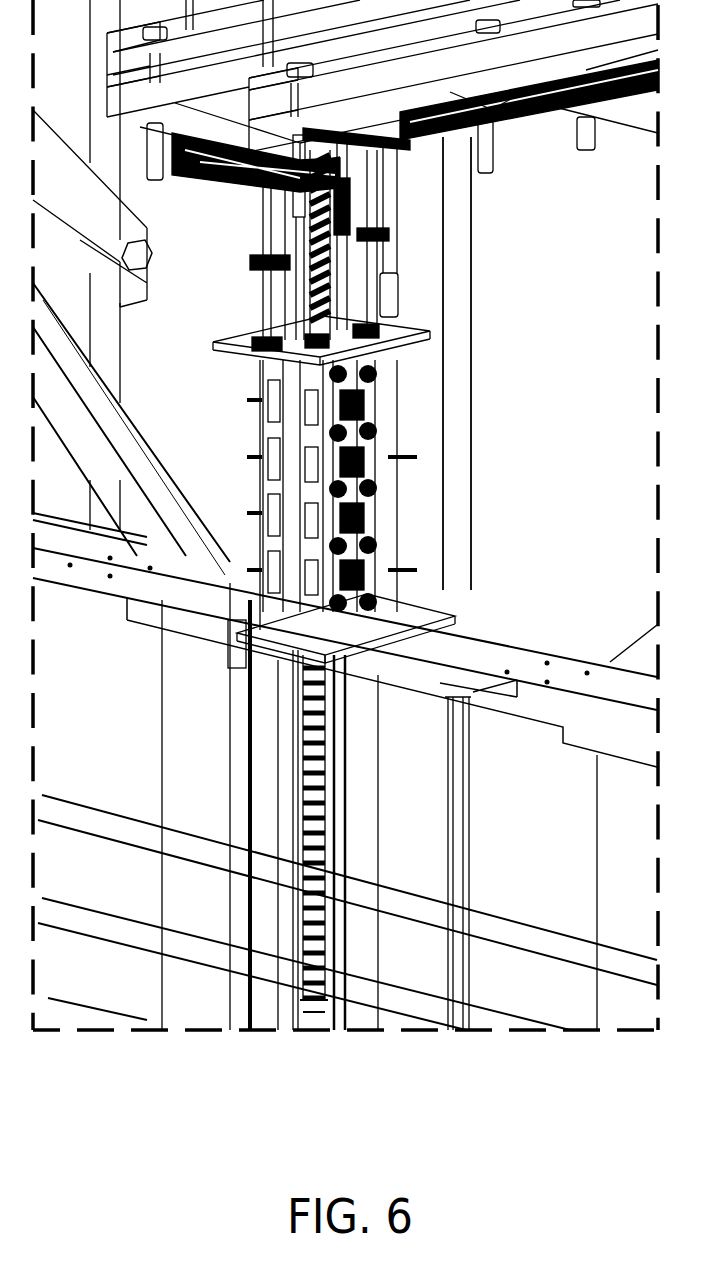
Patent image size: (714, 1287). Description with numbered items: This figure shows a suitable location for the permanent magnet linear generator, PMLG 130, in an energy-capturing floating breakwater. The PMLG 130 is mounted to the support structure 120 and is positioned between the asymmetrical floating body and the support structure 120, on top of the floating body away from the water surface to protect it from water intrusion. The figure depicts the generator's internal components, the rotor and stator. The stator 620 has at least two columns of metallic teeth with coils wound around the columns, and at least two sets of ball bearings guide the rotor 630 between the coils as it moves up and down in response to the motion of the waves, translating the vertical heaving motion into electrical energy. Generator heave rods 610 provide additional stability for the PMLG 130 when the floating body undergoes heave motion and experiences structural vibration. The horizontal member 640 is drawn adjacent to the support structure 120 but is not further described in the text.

The support structure 120 is at (108, 214).
The permanent magnet linear generator (PMLG) 130 is at (430, 276).
The generator heave rods 610 is at (262, 305).
The stator 620 is at (295, 457).
The rotor 630 is at (322, 818).
The horizontal beam 640 is at (490, 636).